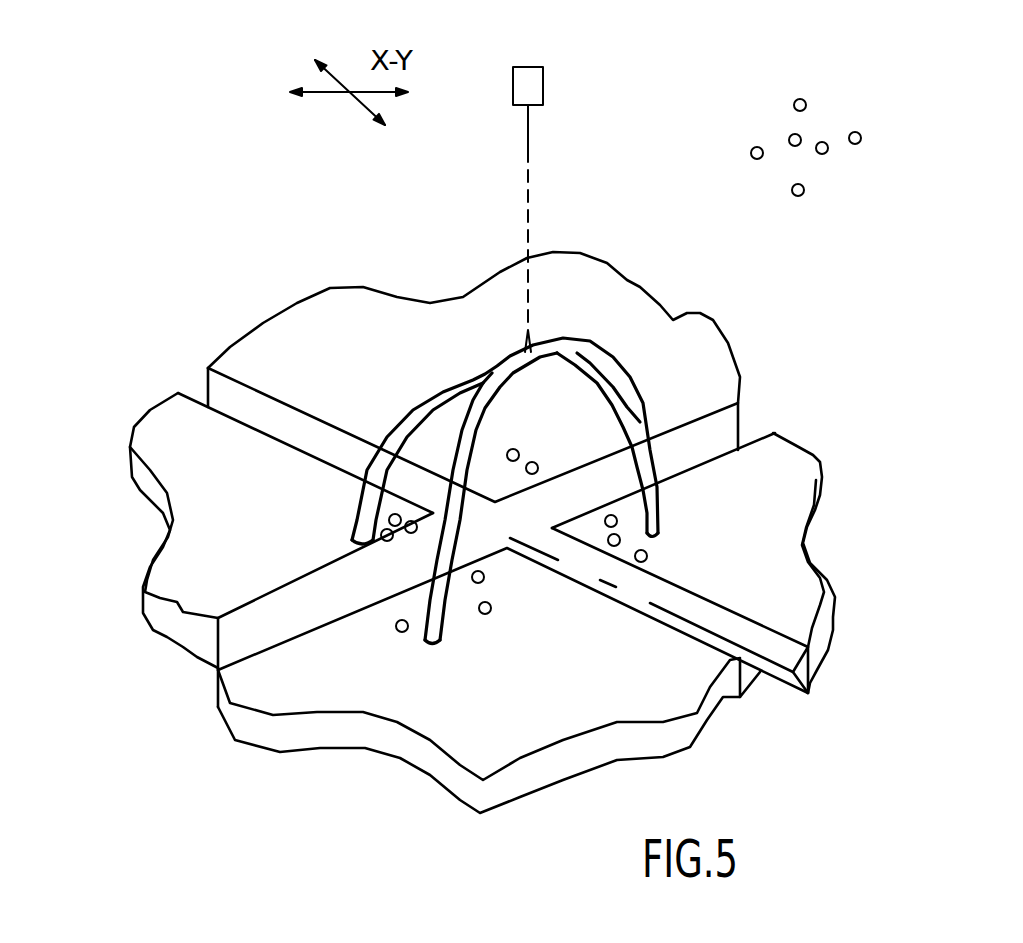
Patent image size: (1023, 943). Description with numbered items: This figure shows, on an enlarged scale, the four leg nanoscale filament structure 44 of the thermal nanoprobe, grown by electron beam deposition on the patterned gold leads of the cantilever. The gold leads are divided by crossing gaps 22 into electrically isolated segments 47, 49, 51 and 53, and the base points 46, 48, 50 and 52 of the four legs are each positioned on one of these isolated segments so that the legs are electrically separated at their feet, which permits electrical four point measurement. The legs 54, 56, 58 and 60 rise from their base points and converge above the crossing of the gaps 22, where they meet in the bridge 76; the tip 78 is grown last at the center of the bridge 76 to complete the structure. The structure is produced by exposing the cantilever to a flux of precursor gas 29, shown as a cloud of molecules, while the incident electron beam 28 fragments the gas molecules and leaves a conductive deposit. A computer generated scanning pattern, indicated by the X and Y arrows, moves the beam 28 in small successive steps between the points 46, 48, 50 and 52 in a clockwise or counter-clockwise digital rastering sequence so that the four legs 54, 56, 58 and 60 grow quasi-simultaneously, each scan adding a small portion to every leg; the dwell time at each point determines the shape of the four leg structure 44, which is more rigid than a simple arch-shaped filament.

The gap 22 is at (232, 402).
The electron beam 28 is at (528, 165).
The precursor gas 29 is at (835, 175).
The four leg structure 44 is at (565, 409).
The base point 46 is at (430, 632).
The electrically isolated segment 47 is at (513, 708).
The base point 48 is at (352, 542).
The electrically isolated segment 49 is at (198, 555).
The base point 50 is at (640, 443).
The electrically isolated segment 51 is at (488, 297).
The base point 52 is at (655, 540).
The electrically isolated segment 53 is at (775, 485).
The leg 54 is at (465, 450).
The leg 56 is at (412, 423).
The leg 58 is at (603, 360).
The leg 60 is at (615, 428).
The bridge 76 is at (547, 340).
The tip 78 is at (525, 342).